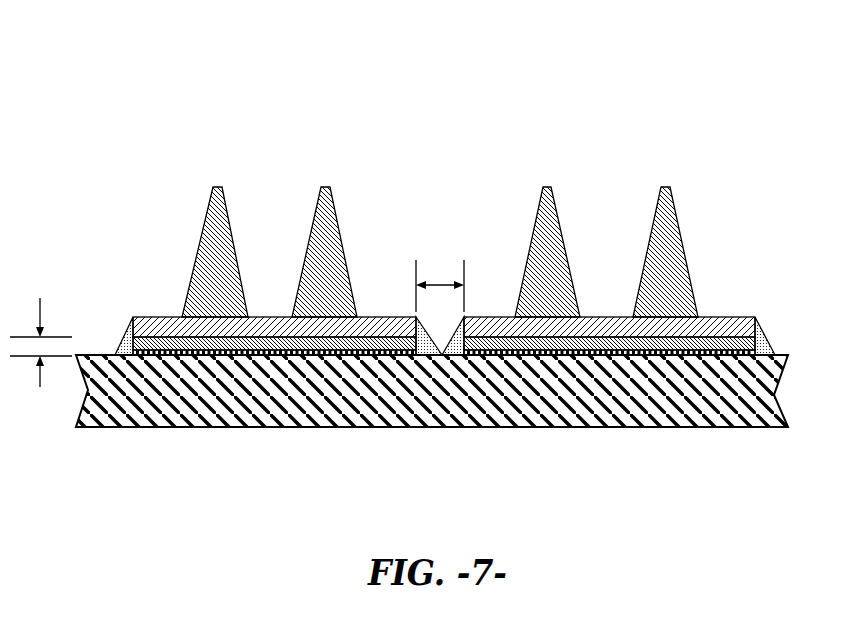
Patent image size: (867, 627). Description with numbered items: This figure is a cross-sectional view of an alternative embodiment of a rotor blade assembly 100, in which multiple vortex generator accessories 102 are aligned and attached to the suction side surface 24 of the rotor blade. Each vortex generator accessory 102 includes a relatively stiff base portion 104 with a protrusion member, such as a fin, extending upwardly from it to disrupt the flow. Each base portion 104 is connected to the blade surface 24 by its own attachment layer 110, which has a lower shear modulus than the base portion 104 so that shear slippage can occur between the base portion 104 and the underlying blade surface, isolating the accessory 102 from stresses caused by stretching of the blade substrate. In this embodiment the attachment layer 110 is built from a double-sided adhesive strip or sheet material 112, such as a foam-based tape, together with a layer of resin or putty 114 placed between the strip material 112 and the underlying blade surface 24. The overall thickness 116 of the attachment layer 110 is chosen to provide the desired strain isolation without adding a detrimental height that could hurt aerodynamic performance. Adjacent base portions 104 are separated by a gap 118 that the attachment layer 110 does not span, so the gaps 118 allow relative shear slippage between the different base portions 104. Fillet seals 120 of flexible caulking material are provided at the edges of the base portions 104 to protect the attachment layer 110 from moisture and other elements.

The suction side 24 is at (212, 408).
The rotor blade assembly 100 is at (651, 120).
The vortex generator accessory 102 is at (263, 184).
The base portion 104 is at (588, 322).
The attachment layer 110 is at (208, 342).
The double-sided adhesive sheet or strip material 112 is at (527, 348).
The layer of resin or putty 114 is at (725, 348).
The thickness 116 is at (43, 323).
The gap 118 is at (443, 282).
The fillet seal 120 is at (395, 330).